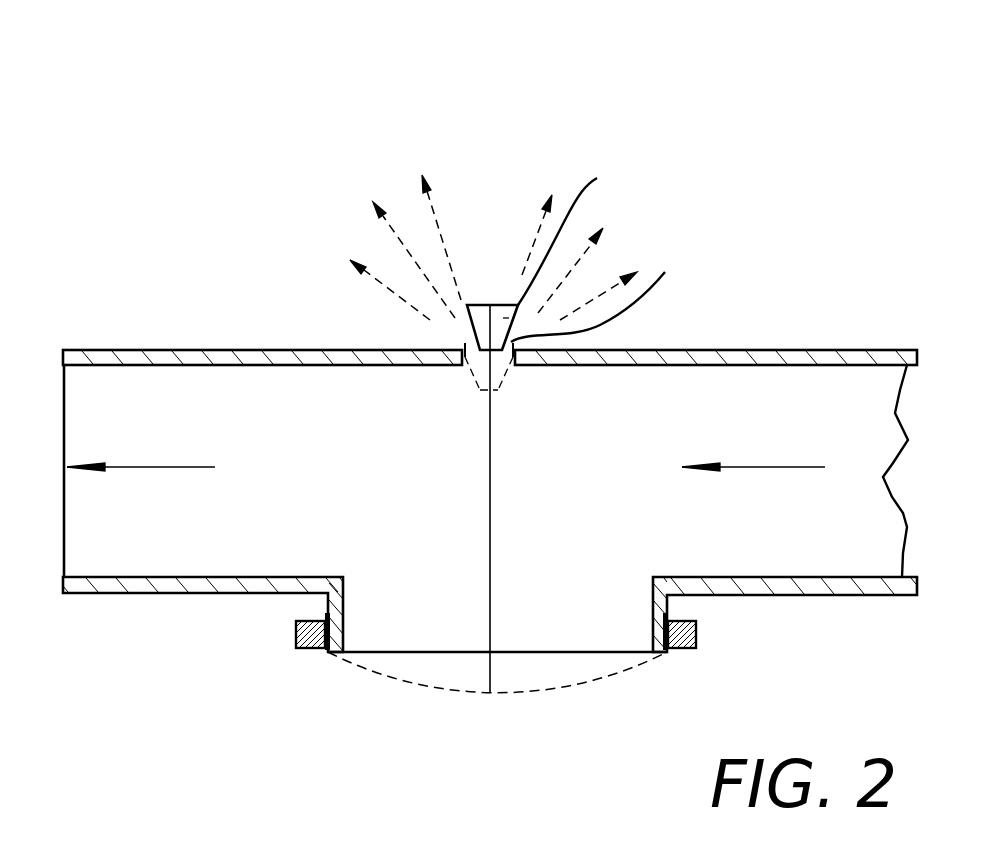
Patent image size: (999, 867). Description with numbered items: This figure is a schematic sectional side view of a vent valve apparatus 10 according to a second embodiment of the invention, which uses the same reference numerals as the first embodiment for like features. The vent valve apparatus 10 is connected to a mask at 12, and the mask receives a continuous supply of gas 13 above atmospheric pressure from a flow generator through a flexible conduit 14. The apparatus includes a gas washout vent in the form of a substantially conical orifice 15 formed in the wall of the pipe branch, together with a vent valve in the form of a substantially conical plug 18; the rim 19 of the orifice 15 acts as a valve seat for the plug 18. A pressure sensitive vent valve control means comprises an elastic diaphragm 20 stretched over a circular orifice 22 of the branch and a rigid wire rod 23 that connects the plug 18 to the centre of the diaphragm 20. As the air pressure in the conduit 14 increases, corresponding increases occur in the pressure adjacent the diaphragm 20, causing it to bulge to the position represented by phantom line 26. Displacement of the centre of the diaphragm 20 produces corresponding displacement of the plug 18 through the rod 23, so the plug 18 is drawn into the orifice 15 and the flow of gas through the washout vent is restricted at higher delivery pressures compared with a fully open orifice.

The vent valve apparatus 10 is at (262, 160).
The mask connection 12 is at (63, 423).
The supply of gas 13 is at (798, 467).
The flexible conduit 14 is at (885, 348).
The conical orifice 15 is at (461, 362).
The conical plug 18 is at (493, 235).
The rim of the orifice 19 is at (610, 290).
The elastic diaphragm 20 is at (548, 652).
The circular orifice 22 is at (345, 623).
The rigid wire rod 23 is at (492, 483).
The phantom line 26 is at (425, 685).